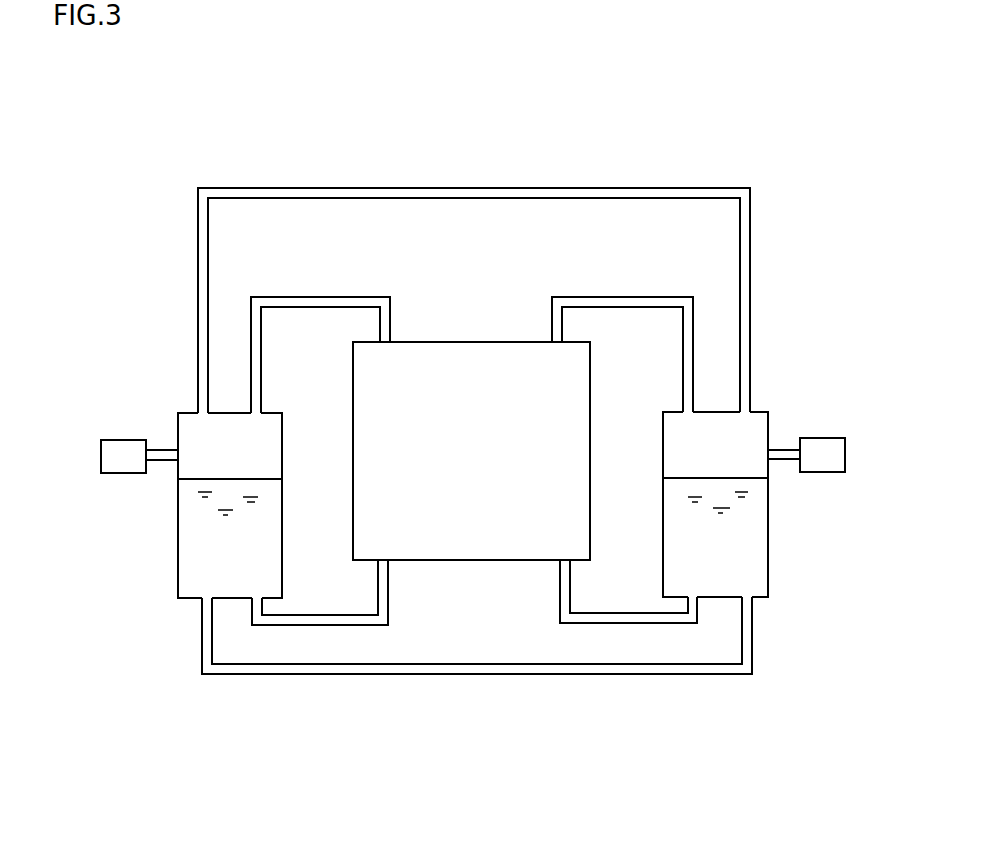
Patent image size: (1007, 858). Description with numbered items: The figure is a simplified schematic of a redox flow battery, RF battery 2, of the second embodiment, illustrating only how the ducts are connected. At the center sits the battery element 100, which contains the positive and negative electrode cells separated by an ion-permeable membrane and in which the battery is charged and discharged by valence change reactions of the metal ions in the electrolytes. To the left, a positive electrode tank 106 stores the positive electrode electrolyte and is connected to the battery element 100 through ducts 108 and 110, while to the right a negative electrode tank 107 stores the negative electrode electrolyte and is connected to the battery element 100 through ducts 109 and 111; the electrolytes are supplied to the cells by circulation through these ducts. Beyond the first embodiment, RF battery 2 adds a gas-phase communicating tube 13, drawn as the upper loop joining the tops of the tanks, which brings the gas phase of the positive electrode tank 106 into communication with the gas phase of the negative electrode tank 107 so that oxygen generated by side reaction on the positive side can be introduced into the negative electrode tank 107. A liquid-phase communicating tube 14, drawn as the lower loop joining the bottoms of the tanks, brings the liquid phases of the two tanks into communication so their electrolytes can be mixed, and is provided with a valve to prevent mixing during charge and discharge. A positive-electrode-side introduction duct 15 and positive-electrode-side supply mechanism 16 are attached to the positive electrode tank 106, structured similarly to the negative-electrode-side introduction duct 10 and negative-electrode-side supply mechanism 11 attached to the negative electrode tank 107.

The RF battery 2 is at (603, 153).
The gas-phase communicating tube 13 is at (382, 188).
The liquid-phase communicating tube 14 is at (500, 674).
The battery element 100 is at (484, 341).
The positive electrode tank 106 is at (282, 508).
The negative electrode tank 107 is at (663, 510).
The duct 108 is at (390, 587).
The duct 109 is at (557, 590).
The duct 110 is at (325, 297).
The duct 111 is at (627, 297).
The positive-electrode-side introduction duct 15 is at (162, 448).
The positive-electrode-side supply mechanism 16 is at (118, 438).
The negative-electrode-side introduction duct 10 is at (783, 448).
The negative-electrode-side supply mechanism 11 is at (828, 437).